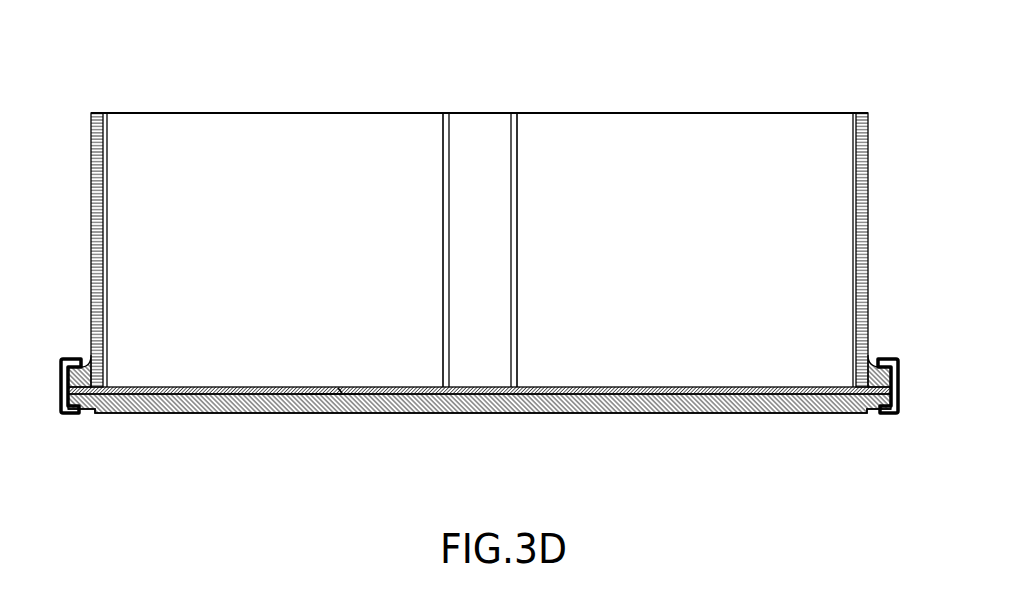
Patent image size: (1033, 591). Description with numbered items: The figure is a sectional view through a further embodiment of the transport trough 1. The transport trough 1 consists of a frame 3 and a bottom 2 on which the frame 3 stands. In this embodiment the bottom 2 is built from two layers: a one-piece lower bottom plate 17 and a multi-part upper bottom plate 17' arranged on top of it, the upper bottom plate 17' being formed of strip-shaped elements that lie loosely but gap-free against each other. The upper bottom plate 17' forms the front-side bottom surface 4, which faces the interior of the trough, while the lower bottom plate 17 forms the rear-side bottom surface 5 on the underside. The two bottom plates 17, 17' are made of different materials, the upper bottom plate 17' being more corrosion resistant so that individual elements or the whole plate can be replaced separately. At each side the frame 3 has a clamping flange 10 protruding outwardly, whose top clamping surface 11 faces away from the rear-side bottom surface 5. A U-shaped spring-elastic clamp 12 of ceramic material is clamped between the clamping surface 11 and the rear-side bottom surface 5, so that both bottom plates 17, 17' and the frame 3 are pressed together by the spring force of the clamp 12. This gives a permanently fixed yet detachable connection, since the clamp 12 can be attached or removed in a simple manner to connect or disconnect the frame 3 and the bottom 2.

The transport trough 1 is at (173, 100).
The bottom 2 is at (620, 428).
The frame 3 is at (704, 150).
The front-side bottom surface 4 is at (238, 385).
The rear-side bottom surface 5 is at (125, 413).
The clamping flange 10 is at (885, 370).
The clamping surface 11 is at (70, 359).
The spring-elastic clamp 12 is at (888, 367).
The lower bottom plate 17 is at (479, 440).
The upper bottom plate 17' is at (286, 433).